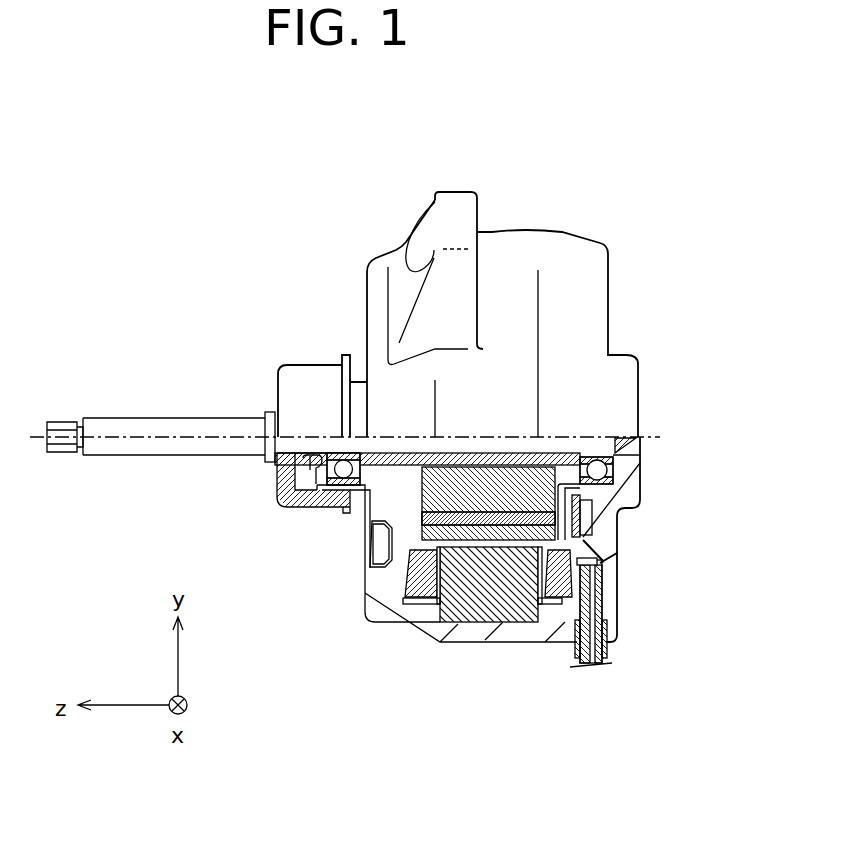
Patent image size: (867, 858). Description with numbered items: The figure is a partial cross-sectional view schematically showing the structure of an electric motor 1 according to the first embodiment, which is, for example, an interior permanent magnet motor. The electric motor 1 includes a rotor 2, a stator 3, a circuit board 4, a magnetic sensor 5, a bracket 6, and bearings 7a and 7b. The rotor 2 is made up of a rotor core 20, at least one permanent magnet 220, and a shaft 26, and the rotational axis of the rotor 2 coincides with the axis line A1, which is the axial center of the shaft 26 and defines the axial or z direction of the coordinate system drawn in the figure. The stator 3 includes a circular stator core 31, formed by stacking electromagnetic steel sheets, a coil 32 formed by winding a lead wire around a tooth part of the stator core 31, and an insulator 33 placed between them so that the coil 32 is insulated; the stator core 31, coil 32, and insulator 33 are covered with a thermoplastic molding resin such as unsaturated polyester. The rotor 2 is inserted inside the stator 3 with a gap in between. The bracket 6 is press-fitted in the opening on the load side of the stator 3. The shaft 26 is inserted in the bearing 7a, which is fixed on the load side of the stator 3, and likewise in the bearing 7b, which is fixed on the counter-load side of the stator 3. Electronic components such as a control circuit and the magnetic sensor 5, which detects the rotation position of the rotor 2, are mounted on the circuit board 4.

The electric motor 1 is at (298, 178).
The rotor 2 is at (420, 488).
The rotor core 20 is at (386, 528).
The permanent magnet 220 is at (523, 527).
The shaft 26 is at (166, 418).
The stator 3 is at (567, 256).
The stator core 31 is at (482, 604).
The coil 32 is at (417, 577).
The insulator 33 is at (437, 602).
The circuit board 4 is at (588, 517).
The magnetic sensor 5 is at (608, 503).
The bracket 6 is at (377, 571).
The bearing 7a is at (326, 484).
The bearing 7b is at (613, 463).
The axis line A1 is at (123, 441).